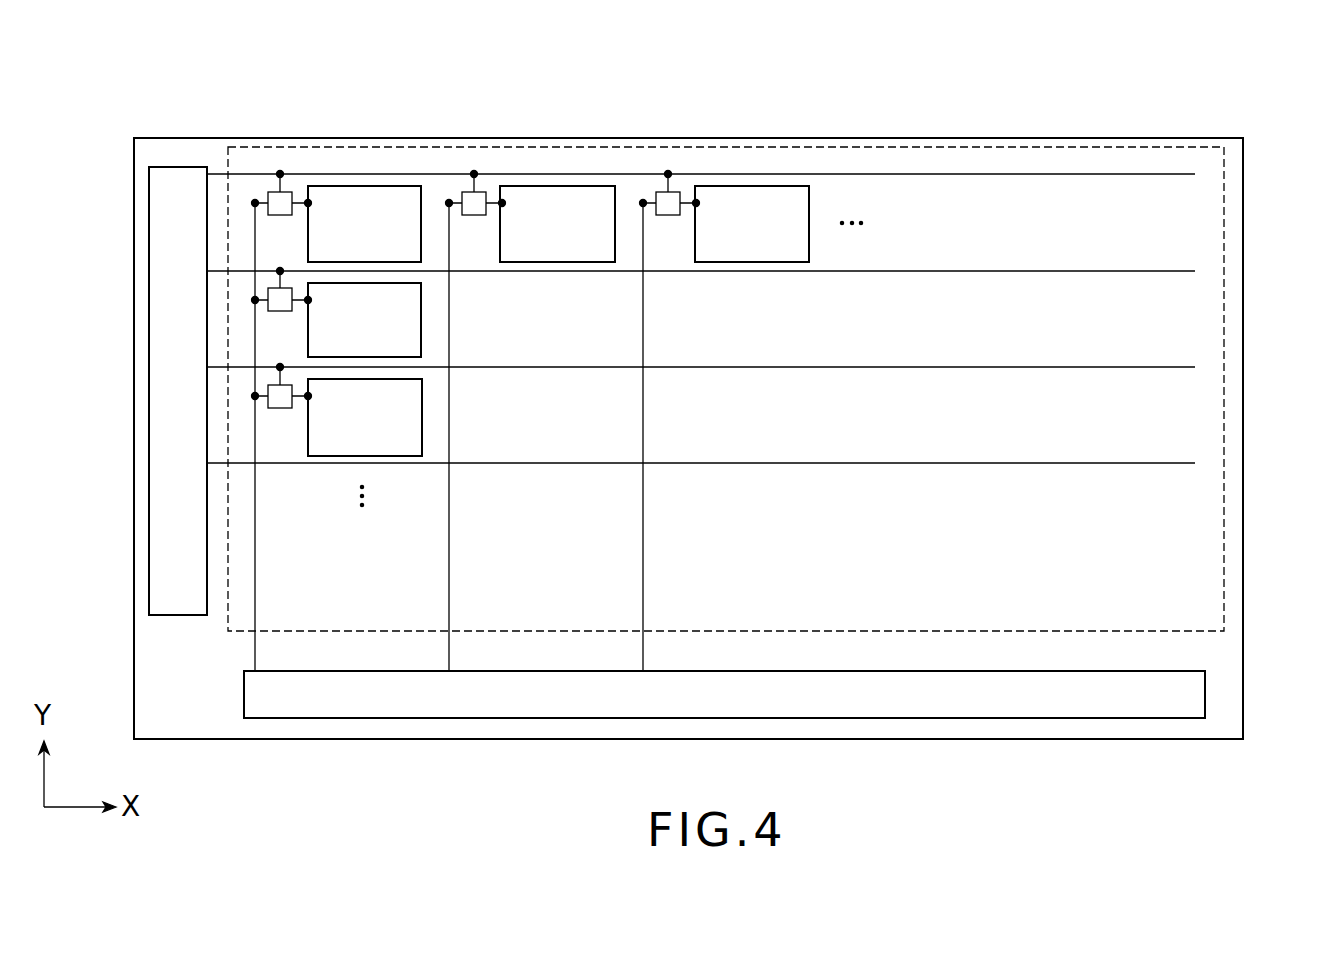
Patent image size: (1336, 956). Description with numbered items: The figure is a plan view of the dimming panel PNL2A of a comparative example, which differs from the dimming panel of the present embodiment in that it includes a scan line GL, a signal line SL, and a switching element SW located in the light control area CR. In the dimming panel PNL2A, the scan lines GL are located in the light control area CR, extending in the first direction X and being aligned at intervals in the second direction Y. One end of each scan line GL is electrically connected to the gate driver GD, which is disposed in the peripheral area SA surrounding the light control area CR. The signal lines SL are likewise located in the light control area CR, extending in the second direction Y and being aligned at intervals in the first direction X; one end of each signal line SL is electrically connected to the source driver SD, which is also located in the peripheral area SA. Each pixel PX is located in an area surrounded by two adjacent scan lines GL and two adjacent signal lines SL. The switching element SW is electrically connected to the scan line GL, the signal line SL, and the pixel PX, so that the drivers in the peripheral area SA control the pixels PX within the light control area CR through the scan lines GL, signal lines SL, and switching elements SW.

The dimming panel PNL2A is at (1211, 121).
The light control area CR is at (1224, 198).
The peripheral area SA is at (1232, 689).
The gate driver GD is at (148, 354).
The source driver SD is at (990, 719).
The scan line GL is at (241, 173).
The signal line SL is at (257, 572).
The switching element SW is at (280, 216).
The pixel PX is at (428, 192).